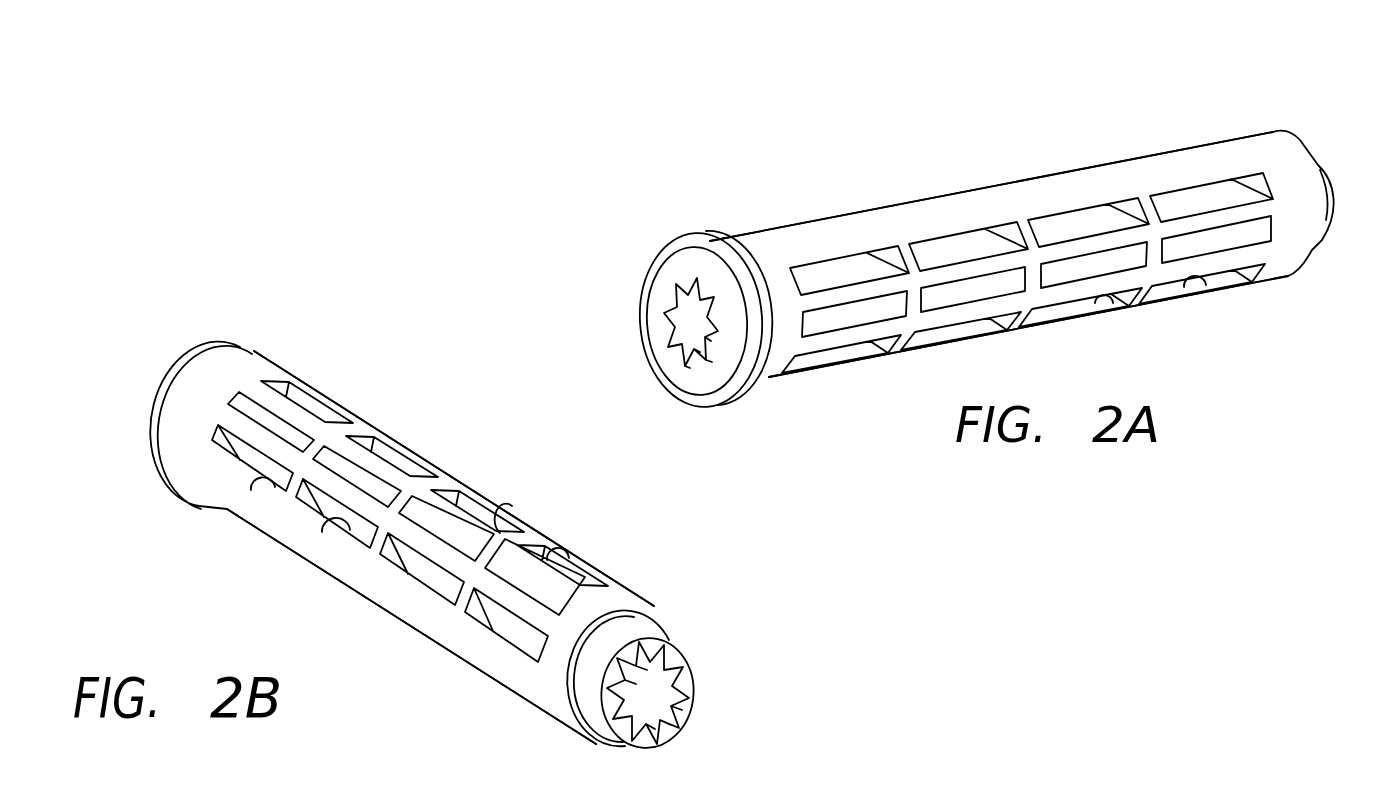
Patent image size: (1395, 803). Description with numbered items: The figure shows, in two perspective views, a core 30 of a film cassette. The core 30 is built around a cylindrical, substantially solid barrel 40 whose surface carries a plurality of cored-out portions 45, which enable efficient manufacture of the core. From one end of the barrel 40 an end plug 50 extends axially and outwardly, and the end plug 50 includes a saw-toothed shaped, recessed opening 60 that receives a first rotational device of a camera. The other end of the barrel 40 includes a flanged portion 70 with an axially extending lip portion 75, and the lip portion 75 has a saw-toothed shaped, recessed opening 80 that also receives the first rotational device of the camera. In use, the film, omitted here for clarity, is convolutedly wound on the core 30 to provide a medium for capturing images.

In FIG. 2A, the core 30 is at (1031, 132).
In FIG. 2B, the core 30 is at (363, 372).
In FIG. 2A, the barrel 40 is at (916, 201).
In FIG. 2B, the barrel 40 is at (405, 452).
In FIG. 2A, the cored-out portions 45 is at (1193, 296).
In FIG. 2B, the cored-out portions 45 is at (322, 532).
In FIG. 2A, the end plug 50 is at (1336, 163).
In FIG. 2B, the end plug 50 is at (656, 623).
In FIG. 2B, the recessed opening 60 is at (668, 697).
In FIG. 2A, the flanged portion 70 is at (708, 232).
In FIG. 2B, the flanged portion 70 is at (201, 362).
In FIG. 2A, the lip portion 75 is at (742, 357).
In FIG. 2A, the recessed opening 80 is at (667, 317).